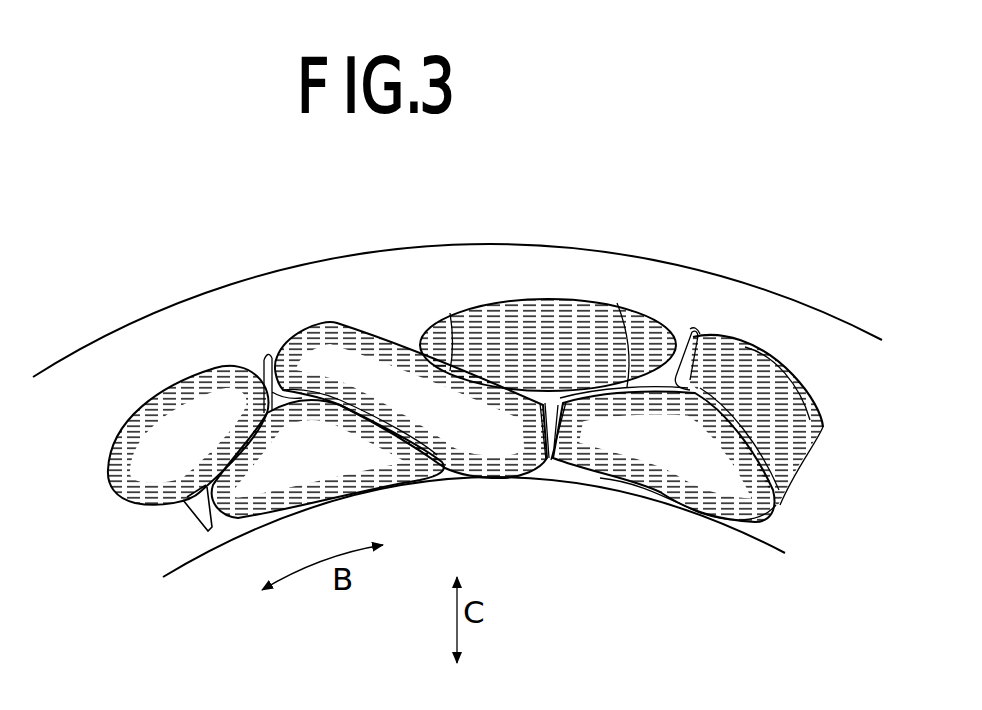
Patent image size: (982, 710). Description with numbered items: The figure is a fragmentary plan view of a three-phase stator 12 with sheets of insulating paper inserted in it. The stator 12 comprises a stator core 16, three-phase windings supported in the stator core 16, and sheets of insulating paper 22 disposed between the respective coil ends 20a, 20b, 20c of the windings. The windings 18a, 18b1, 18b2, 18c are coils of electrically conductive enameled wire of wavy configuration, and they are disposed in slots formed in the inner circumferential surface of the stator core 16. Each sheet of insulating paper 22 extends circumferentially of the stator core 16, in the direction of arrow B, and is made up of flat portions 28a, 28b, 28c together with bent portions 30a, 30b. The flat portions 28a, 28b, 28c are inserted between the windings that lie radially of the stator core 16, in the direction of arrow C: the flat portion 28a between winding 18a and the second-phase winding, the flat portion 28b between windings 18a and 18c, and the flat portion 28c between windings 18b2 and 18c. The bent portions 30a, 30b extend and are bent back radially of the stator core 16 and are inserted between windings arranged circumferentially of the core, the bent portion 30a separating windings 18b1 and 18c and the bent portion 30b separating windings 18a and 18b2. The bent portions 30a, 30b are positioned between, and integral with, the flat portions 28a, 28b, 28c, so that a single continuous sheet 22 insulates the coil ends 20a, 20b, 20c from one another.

The three-phase stator 12 is at (704, 150).
The stator core 16 is at (131, 318).
The winding 18a is at (543, 300).
The winding 18b1 is at (312, 323).
The winding 18b2 is at (778, 355).
The winding 18c is at (643, 473).
The coil end 20a is at (497, 320).
The coil end 20b is at (470, 462).
The coil end 20c is at (723, 487).
The sheet of insulating paper 22 is at (256, 356).
The flat portion 28a is at (450, 337).
The flat portion 28b is at (608, 300).
The flat portion 28c is at (775, 490).
The bent portion 30a is at (548, 462).
The bent portion 30b is at (691, 330).